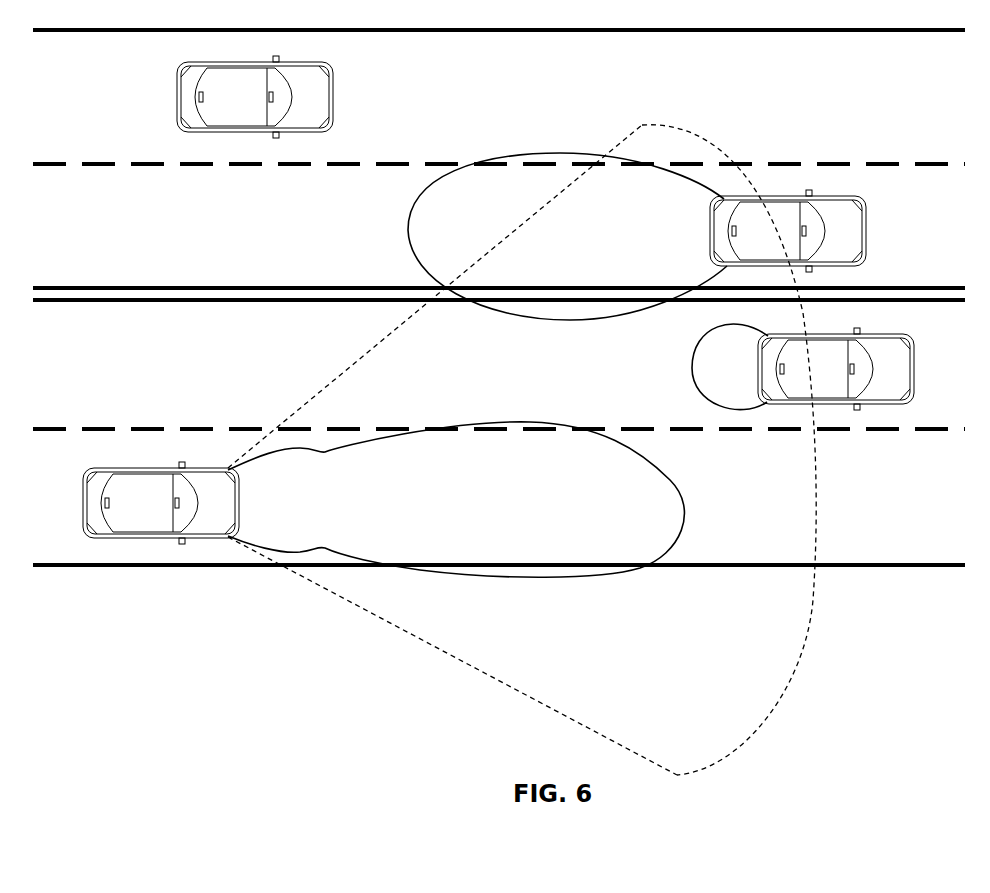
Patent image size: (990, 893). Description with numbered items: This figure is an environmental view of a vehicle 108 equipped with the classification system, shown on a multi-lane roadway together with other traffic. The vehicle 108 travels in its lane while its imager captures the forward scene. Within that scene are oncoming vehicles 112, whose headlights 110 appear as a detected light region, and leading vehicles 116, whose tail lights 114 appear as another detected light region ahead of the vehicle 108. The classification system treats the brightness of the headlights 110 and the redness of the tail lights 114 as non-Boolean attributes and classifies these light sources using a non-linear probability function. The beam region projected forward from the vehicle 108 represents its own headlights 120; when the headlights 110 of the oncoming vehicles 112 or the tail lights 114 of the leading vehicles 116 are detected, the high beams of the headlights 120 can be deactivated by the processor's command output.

The vehicle 108 is at (110, 538).
The headlights 110 is at (715, 208).
The oncoming vehicles 112 is at (868, 228).
The tail lights 114 is at (762, 331).
The leading vehicles 116 is at (912, 368).
The headlights 120 is at (227, 468).